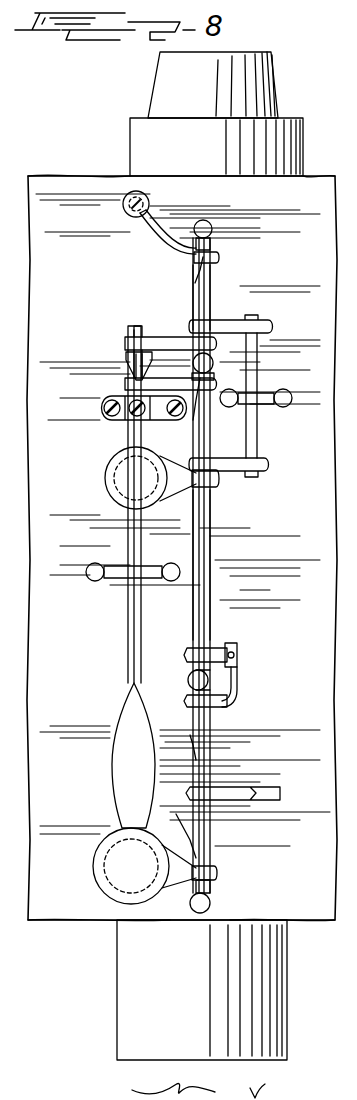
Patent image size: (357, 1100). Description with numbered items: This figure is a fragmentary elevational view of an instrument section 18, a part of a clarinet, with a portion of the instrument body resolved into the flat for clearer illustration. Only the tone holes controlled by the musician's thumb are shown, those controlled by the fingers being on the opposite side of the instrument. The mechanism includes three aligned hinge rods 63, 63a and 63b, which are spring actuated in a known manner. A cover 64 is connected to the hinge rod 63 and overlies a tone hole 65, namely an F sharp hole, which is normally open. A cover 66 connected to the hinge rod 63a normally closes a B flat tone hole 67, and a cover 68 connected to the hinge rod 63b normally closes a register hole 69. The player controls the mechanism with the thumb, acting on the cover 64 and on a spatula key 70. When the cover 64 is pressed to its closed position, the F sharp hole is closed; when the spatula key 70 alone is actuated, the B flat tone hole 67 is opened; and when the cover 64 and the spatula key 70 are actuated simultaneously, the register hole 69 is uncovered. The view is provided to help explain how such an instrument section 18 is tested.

The instrument section 18 is at (258, 967).
The hinge rod 63 is at (200, 731).
The hinge rod 63a is at (204, 526).
The hinge rod 63b is at (208, 298).
The cover 64 is at (118, 890).
The tone hole 65 is at (108, 873).
The cover 66 is at (121, 455).
The B flat tone hole 67 is at (112, 486).
The cover 68 is at (145, 196).
The register hole 69 is at (128, 215).
The spatula key 70 is at (127, 725).